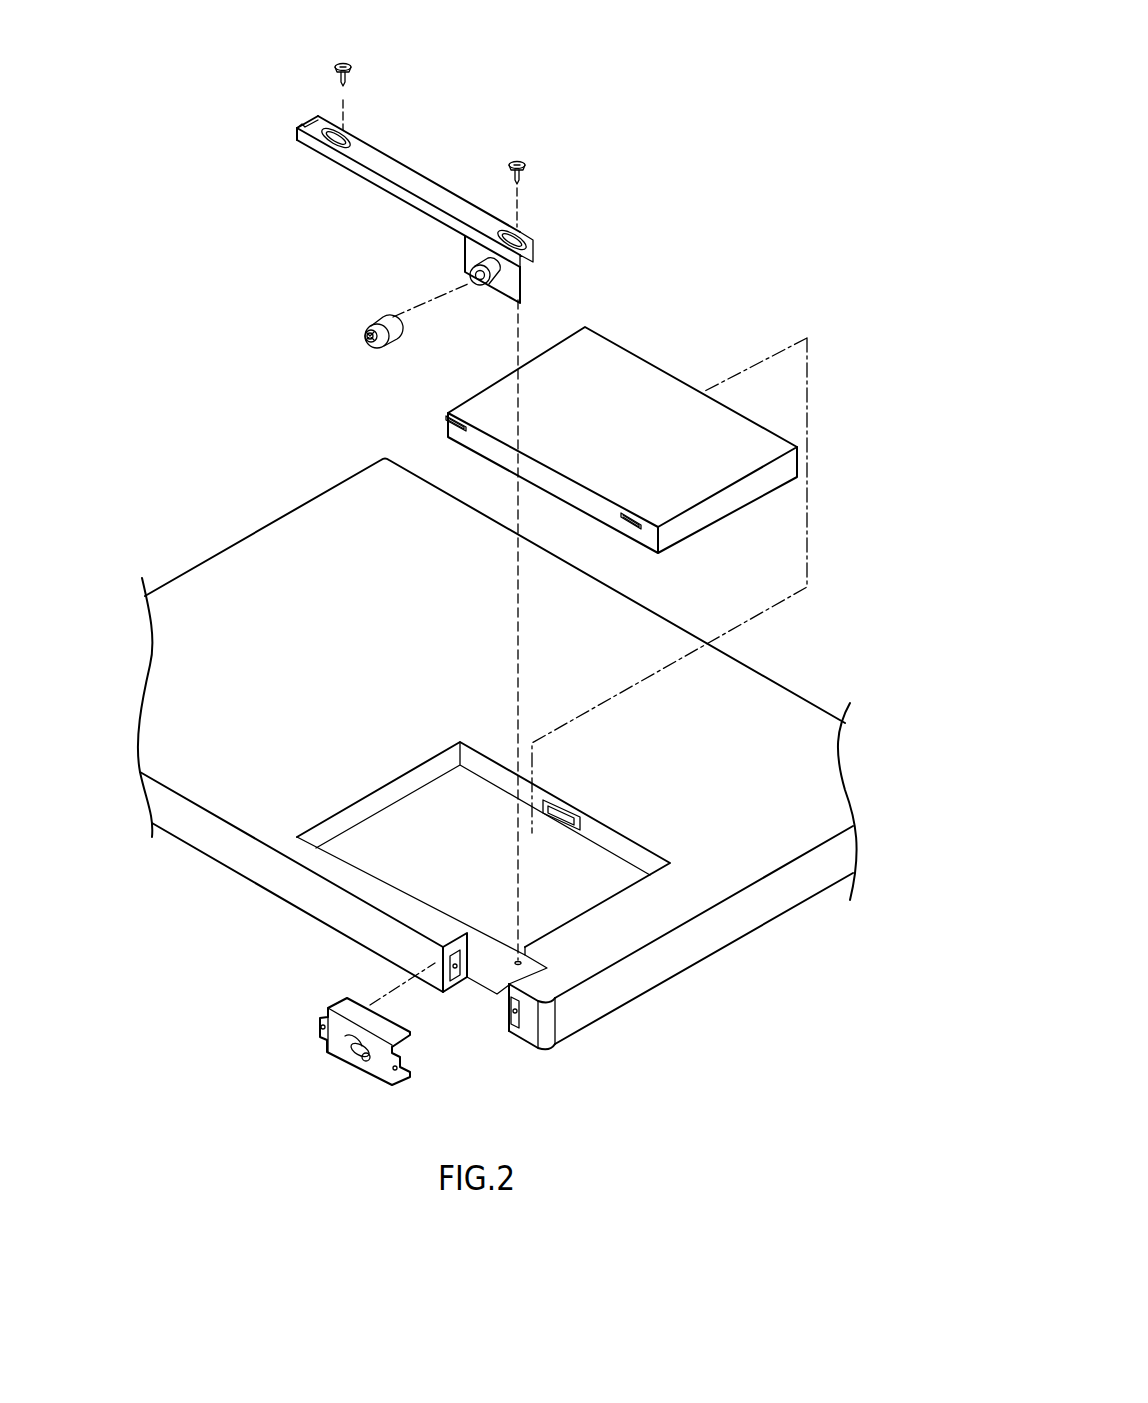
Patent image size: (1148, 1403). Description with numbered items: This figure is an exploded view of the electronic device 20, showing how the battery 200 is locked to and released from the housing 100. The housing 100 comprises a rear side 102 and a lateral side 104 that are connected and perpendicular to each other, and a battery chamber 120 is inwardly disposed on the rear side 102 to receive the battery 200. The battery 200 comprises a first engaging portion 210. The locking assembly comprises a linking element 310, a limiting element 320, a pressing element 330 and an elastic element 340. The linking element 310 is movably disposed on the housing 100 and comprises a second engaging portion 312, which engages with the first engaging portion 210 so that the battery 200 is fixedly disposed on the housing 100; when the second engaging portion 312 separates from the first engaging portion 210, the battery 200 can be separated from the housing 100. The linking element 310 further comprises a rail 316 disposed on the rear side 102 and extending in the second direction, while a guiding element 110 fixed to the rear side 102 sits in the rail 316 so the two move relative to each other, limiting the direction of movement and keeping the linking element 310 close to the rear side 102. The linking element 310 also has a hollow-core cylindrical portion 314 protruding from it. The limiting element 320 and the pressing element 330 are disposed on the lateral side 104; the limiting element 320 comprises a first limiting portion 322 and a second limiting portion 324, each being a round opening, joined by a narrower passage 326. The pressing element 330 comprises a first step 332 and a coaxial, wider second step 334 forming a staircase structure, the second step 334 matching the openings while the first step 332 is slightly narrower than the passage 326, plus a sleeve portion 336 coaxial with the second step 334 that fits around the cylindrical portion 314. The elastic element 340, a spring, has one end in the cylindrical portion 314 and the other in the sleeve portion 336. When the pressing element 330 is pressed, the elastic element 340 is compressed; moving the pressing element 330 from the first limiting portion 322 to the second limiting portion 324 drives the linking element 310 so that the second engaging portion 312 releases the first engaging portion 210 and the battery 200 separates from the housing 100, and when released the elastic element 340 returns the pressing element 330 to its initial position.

The electronic device 20 is at (826, 81).
The housing 100 is at (678, 958).
The rear side 102 is at (218, 788).
The lateral side 104 is at (272, 868).
The guiding element 110 is at (338, 73).
The battery chamber 120 is at (600, 878).
The battery 200 is at (731, 500).
The first engaging portion 210 is at (446, 412).
The linking element 310 is at (392, 168).
The second engaging portion 312 is at (303, 137).
The cylindrical portion 314 is at (523, 270).
The rail 316 is at (337, 152).
The limiting element 320 is at (348, 1002).
The first limiting portion 322 is at (355, 1057).
The second limiting portion 324 is at (360, 1045).
The passage 326 is at (367, 1058).
The pressing element 330 is at (293, 300).
The first step 332 is at (374, 346).
The second step 334 is at (366, 335).
The sleeve portion 336 is at (380, 313).
The elastic element 340 is at (490, 268).